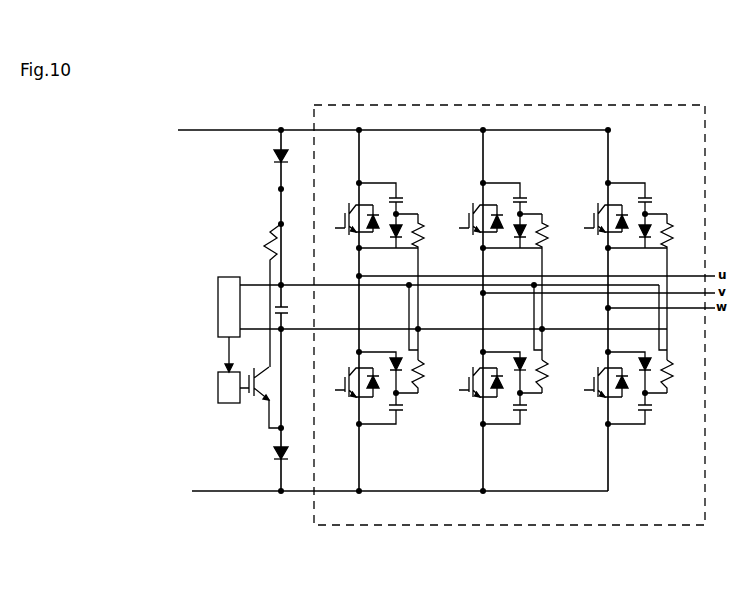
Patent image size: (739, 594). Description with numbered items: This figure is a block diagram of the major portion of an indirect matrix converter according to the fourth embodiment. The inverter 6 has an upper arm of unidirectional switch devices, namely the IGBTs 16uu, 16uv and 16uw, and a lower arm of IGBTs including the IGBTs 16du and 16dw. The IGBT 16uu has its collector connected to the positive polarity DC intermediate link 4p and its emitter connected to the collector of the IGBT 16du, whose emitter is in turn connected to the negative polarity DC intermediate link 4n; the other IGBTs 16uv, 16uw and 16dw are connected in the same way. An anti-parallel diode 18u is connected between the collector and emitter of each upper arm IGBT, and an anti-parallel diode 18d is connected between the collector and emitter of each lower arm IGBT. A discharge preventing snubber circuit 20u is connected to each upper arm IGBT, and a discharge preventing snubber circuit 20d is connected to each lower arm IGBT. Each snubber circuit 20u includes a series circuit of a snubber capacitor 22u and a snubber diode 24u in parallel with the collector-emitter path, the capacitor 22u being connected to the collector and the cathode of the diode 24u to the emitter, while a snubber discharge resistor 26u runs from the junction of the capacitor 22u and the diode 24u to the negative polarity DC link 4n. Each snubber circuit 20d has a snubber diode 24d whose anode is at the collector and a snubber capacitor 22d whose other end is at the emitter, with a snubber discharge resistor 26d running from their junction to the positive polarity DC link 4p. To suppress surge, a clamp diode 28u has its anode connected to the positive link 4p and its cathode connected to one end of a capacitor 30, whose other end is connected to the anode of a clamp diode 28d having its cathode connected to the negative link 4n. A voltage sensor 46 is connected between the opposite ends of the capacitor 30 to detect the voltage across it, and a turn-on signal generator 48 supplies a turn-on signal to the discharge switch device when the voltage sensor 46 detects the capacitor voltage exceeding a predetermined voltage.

The positive polarity DC intermediate link 4p is at (260, 130).
The negative polarity DC intermediate link 4n is at (264, 491).
The inverter 6 is at (527, 513).
The IGBT 16uu is at (349, 204).
The IGBT 16uv is at (473, 205).
The IGBT 16uw is at (598, 205).
The IGBT 16du is at (357, 397).
The IGBT 16dw is at (598, 397).
The anti-parallel diode 18u is at (353, 238).
The anti-parallel diode 18d is at (376, 400).
The discharge preventing snubber circuit 20u is at (492, 253).
The discharge preventing snubber circuit 20d is at (495, 383).
The snubber capacitor 22u is at (398, 198).
The snubber capacitor 22d is at (525, 410).
The snubber diode 24u is at (399, 249).
The snubber diode 24d is at (521, 356).
The snubber discharge resistor 26u is at (419, 232).
The snubber discharge resistor 26d is at (544, 380).
The clamp diode 28u is at (284, 164).
The clamp diode 28d is at (288, 460).
The capacitor 30 is at (283, 334).
The voltage sensor 46 is at (218, 300).
The turn-on signal generator 48 is at (218, 383).